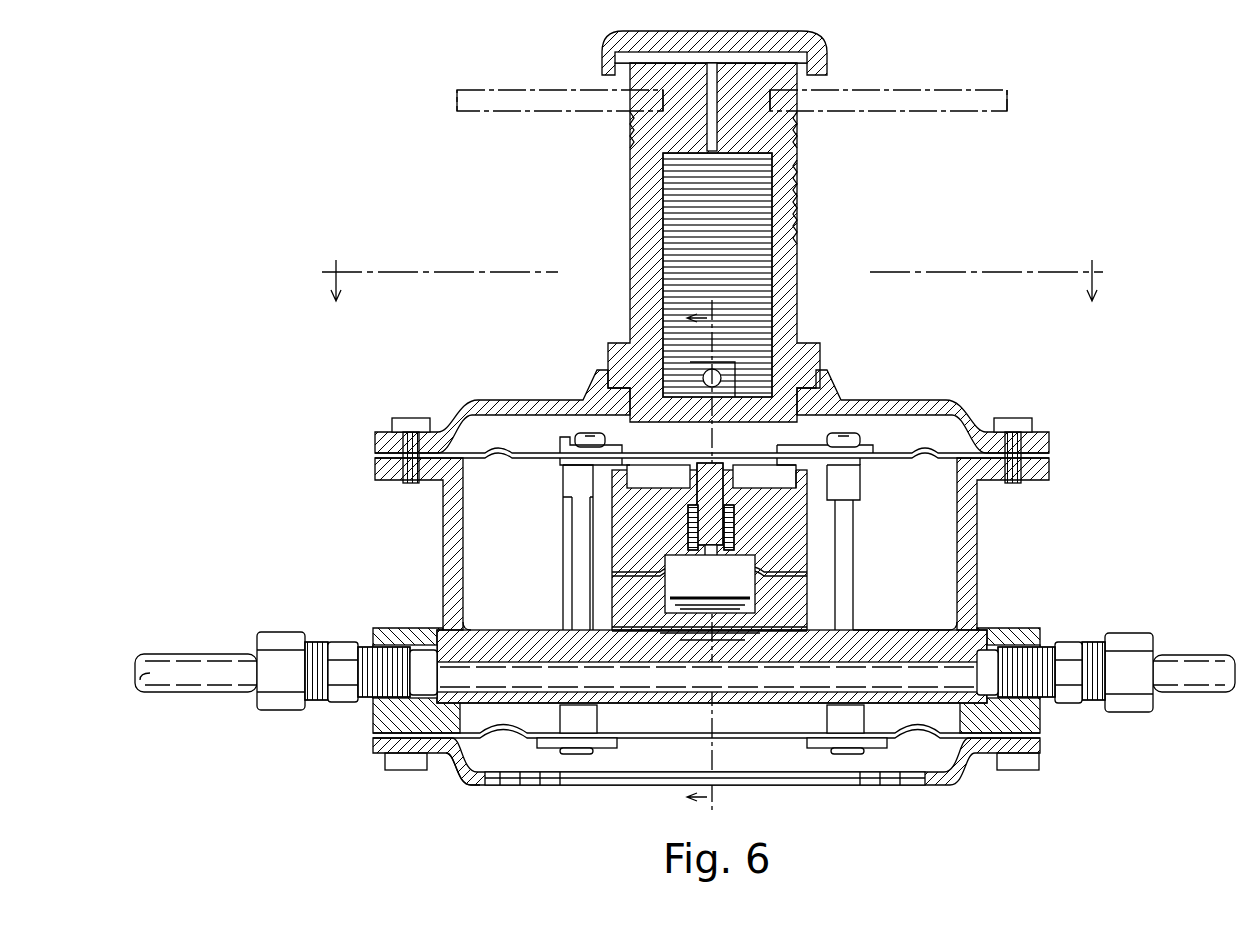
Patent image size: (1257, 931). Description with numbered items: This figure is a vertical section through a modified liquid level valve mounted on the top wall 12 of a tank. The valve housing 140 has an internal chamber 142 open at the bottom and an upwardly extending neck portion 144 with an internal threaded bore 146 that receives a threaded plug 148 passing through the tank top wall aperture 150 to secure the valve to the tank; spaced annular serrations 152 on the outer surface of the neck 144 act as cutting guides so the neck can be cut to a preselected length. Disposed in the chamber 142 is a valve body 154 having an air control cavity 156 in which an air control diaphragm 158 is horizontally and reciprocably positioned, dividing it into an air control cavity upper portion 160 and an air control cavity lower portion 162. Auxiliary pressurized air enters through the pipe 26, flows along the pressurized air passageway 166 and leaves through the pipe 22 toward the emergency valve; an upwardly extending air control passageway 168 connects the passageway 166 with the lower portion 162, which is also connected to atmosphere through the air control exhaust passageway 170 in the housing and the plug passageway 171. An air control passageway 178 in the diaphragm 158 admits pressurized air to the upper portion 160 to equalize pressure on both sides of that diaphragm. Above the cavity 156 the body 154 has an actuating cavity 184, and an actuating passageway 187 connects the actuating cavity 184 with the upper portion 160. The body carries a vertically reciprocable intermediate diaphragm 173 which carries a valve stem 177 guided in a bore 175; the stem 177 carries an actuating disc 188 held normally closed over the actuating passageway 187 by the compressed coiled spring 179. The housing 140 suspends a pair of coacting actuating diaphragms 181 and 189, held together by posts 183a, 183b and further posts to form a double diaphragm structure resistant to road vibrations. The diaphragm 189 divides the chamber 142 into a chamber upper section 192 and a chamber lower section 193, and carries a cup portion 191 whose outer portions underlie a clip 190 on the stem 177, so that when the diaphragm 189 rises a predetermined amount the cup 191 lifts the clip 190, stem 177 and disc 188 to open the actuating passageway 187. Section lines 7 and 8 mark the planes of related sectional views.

The top wall 12 is at (958, 89).
The pipe 22 is at (1180, 694).
The pipe 26 is at (190, 694).
The valve housing 140 is at (717, 595).
The internal chamber 142 is at (503, 563).
The neck portion 144 is at (630, 218).
The internal threaded bore 146 is at (668, 205).
The threaded plug 148 is at (828, 44).
The tank top wall aperture 150 is at (790, 126).
The annular serrations 152 is at (805, 190).
The valve body 154 is at (612, 512).
The air control cavity 156 is at (666, 612).
The air control diaphragm 158 is at (668, 633).
The air control cavity upper portion 160 is at (755, 613).
The air control cavity lower portion 162 is at (745, 640).
The pressurized air passageway 166 is at (440, 630).
The air control passageway 168 is at (716, 660).
The air control exhaust passageway 170 is at (728, 242).
The plug passageway 171 is at (665, 120).
The intermediate diaphragm 173 is at (724, 545).
The bore 175 is at (663, 540).
The valve stem 177 is at (732, 497).
The air control passageway 178 is at (700, 660).
The compressed coiled spring 179 is at (736, 530).
The actuating diaphragm 181 is at (467, 782).
The post 183a is at (566, 487).
The post 183b is at (853, 522).
The actuating cavity 184 is at (672, 582).
The actuating passageway 187 is at (755, 598).
The actuating disc 188 is at (755, 592).
The actuating diaphragm 189 is at (541, 386).
The clip 190 is at (757, 473).
The cup portion 191 is at (657, 477).
The chamber upper section 192 is at (905, 523).
The chamber lower section 193 is at (710, 737).
The section line 7 is at (712, 557).
The section line 8 is at (709, 286).